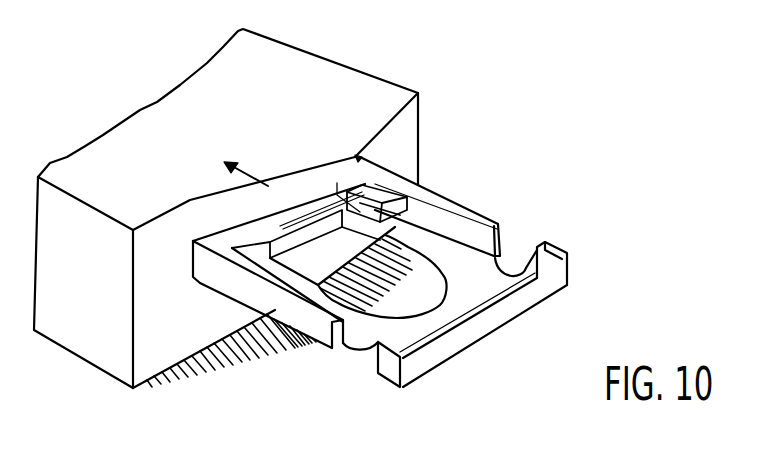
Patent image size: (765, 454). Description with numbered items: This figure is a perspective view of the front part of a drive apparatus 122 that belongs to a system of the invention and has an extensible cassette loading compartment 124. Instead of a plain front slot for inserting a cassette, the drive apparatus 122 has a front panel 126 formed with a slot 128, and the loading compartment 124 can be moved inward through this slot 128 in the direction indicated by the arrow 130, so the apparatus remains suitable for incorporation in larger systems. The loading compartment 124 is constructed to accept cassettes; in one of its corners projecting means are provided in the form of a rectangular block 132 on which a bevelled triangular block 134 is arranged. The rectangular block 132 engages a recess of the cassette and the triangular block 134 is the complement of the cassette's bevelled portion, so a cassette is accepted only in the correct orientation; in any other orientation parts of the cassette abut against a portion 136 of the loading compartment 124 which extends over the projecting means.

The drive apparatus 122 is at (345, 31).
The loading compartment 124 is at (326, 332).
The front panel 126 is at (195, 332).
The slot 128 is at (352, 157).
The arrow 130 is at (305, 203).
The rectangular block 132 is at (424, 223).
The bevelled triangular block 134 is at (418, 187).
The portion of the loading compartment 136 is at (373, 180).